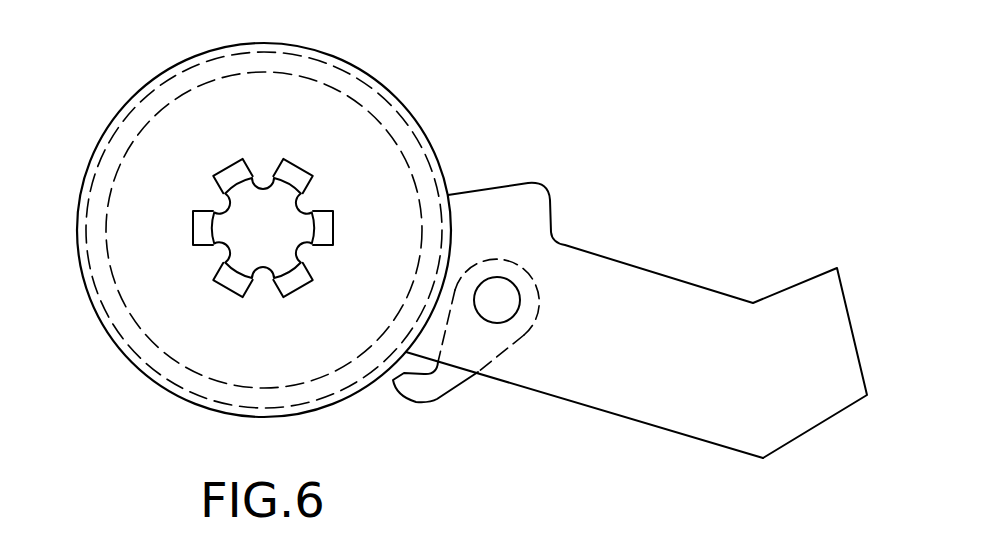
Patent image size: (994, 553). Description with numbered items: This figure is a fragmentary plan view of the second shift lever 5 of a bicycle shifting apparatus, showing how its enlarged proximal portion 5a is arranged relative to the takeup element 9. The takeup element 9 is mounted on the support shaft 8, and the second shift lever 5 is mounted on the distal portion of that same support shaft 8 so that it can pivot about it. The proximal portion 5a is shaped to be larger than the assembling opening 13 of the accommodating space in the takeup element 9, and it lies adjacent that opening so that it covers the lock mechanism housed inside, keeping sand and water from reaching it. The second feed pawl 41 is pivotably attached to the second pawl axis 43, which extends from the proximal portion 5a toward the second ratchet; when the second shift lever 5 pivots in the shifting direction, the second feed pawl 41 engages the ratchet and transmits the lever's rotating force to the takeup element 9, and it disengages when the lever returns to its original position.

The second shift lever 5 is at (688, 279).
The proximal portion of the second shift lever 5a is at (600, 402).
The support shaft 8 is at (260, 262).
The takeup element 9 is at (402, 120).
The assembling opening 13 is at (151, 343).
The second feed pawl 41 is at (423, 402).
The second pawl axis 43 is at (502, 290).